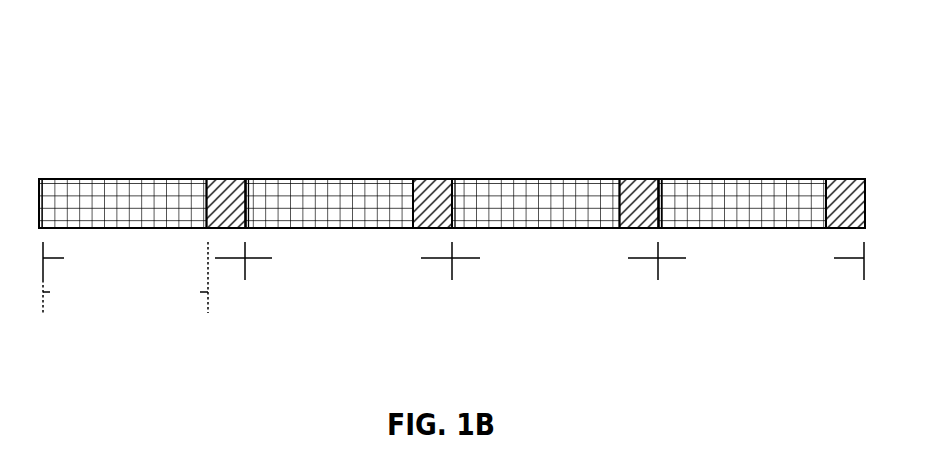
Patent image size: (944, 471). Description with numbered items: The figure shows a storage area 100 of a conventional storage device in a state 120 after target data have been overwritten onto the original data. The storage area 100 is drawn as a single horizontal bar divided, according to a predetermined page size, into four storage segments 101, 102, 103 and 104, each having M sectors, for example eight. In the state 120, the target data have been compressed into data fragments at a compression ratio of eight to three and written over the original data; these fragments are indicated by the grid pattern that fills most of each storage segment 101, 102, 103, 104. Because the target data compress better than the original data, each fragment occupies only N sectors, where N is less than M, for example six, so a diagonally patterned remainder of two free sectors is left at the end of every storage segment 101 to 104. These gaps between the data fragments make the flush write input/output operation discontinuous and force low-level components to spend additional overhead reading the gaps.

The storage area 100 is at (147, 59).
The storage segment 101 is at (122, 178).
The storage segment 102 is at (337, 178).
The storage segment 103 is at (545, 178).
The storage segment 104 is at (752, 178).
The state 120 is at (705, 72).